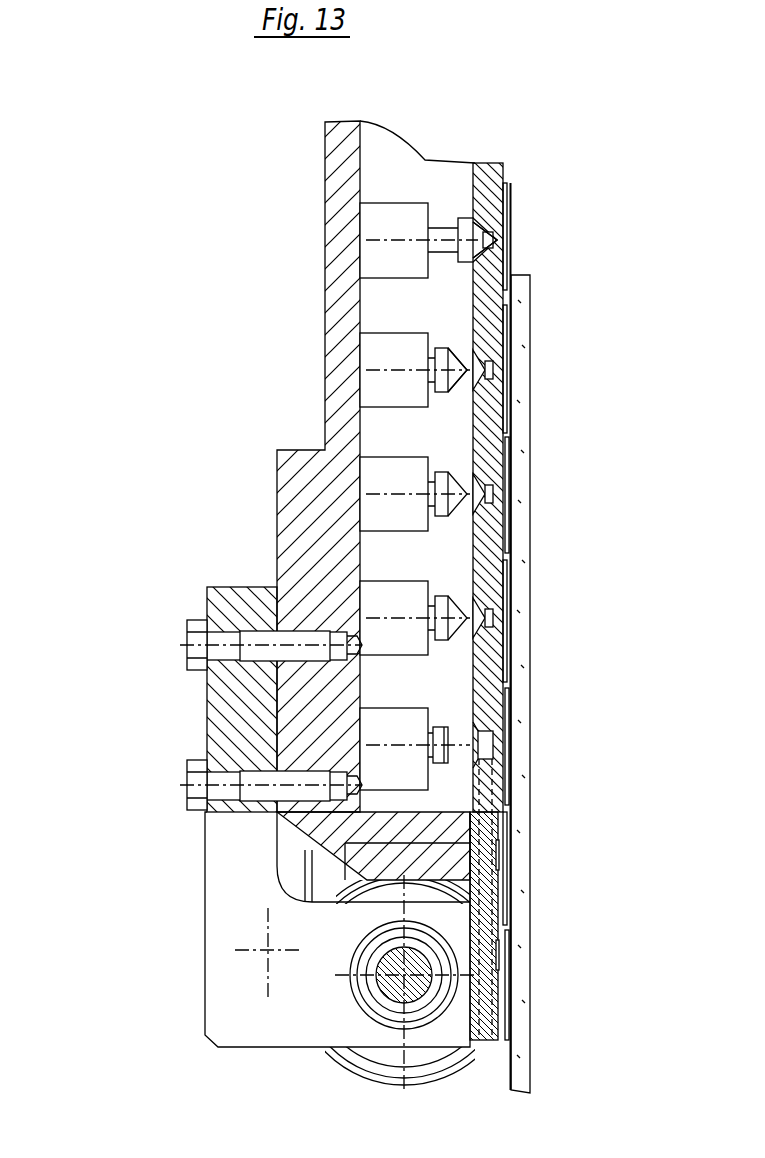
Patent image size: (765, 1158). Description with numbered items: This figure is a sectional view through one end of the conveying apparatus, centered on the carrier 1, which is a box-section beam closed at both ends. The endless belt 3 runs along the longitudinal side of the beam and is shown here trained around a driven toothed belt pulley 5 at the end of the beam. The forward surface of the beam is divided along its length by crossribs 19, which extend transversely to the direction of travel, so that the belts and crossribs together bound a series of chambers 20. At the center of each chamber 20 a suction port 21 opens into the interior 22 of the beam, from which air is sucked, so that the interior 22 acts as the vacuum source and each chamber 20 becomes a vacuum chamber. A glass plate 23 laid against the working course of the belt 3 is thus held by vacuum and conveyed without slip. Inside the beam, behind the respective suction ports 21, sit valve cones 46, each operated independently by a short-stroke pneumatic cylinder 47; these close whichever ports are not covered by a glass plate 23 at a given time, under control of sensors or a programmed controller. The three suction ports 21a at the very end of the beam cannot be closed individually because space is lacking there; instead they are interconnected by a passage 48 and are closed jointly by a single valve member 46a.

The carrier 1 is at (337, 160).
The endless belt 3 is at (310, 866).
The belt pulley 5 is at (362, 1062).
The crossrib 19 is at (509, 437).
The chamber 20 is at (505, 413).
The suction port 21 is at (492, 500).
The suction port 21a is at (494, 746).
The interior 22 is at (426, 197).
The glass plate 23 is at (520, 829).
The valve cone 46 is at (458, 363).
The valve member 46a is at (277, 750).
The short-stroke pneumatic cylinder 47 is at (383, 343).
The passage 48 is at (493, 812).